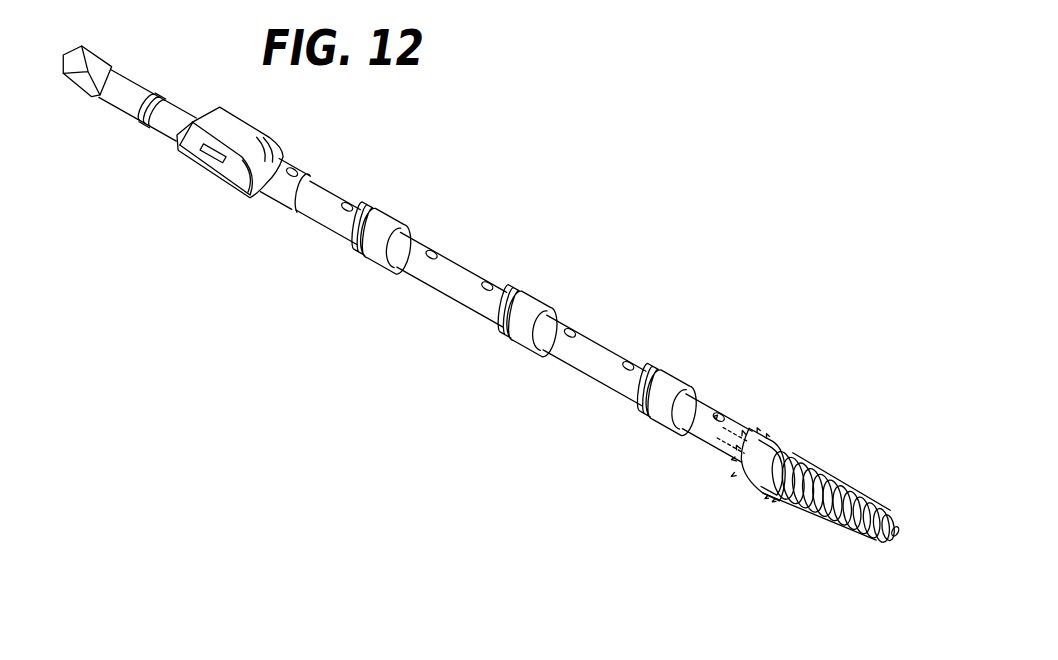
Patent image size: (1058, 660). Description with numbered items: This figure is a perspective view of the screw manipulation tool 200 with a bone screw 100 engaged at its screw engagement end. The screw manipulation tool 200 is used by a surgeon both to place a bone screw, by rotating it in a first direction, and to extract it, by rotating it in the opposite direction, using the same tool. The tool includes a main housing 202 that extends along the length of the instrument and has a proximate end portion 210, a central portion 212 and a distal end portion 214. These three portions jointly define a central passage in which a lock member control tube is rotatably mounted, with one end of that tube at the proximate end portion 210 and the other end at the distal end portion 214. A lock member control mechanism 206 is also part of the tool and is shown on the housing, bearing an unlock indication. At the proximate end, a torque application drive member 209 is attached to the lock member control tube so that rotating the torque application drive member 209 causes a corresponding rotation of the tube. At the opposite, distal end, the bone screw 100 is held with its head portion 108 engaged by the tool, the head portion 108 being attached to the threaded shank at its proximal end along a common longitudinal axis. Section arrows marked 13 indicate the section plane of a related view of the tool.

The bone screw 100 is at (872, 478).
The head portion 108 is at (761, 463).
The screw manipulation tool 200 is at (324, 164).
The main housing 202 is at (510, 311).
The lock member control mechanism 206 is at (228, 151).
The torque application drive member 209 is at (84, 70).
The proximate end portion 210 is at (147, 106).
The central portion 212 is at (380, 238).
The distal end portion 214 is at (729, 434).
The section line 13- 13 is at (708, 442).